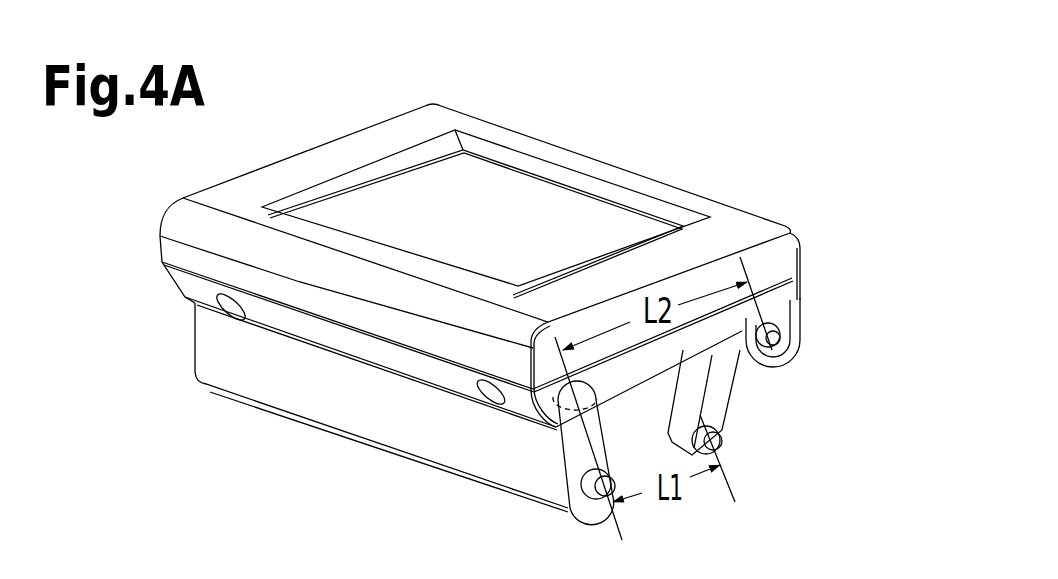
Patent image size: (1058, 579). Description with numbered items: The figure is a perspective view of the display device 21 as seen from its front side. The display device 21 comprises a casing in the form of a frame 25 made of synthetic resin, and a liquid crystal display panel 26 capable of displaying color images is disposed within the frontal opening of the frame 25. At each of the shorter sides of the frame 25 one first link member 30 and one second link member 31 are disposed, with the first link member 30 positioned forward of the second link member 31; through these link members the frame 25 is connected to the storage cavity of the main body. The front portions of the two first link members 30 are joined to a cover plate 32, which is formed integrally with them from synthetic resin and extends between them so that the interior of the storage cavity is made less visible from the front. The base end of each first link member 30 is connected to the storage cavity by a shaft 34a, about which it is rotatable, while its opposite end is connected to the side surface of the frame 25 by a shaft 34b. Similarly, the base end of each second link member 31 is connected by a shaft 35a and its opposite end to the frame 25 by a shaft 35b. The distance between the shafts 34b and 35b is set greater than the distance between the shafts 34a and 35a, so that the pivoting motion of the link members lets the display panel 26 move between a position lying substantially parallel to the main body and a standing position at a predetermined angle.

The display device 21 is at (478, 105).
The frame 25 is at (320, 158).
The liquid crystal display panel 26 is at (493, 190).
The first link member 30 is at (575, 443).
The second link member 31 is at (715, 397).
The cover plate 32 is at (323, 393).
The shaft 34a is at (598, 487).
The shaft 34b is at (560, 400).
The shaft 35a is at (722, 437).
The shaft 35b is at (774, 336).